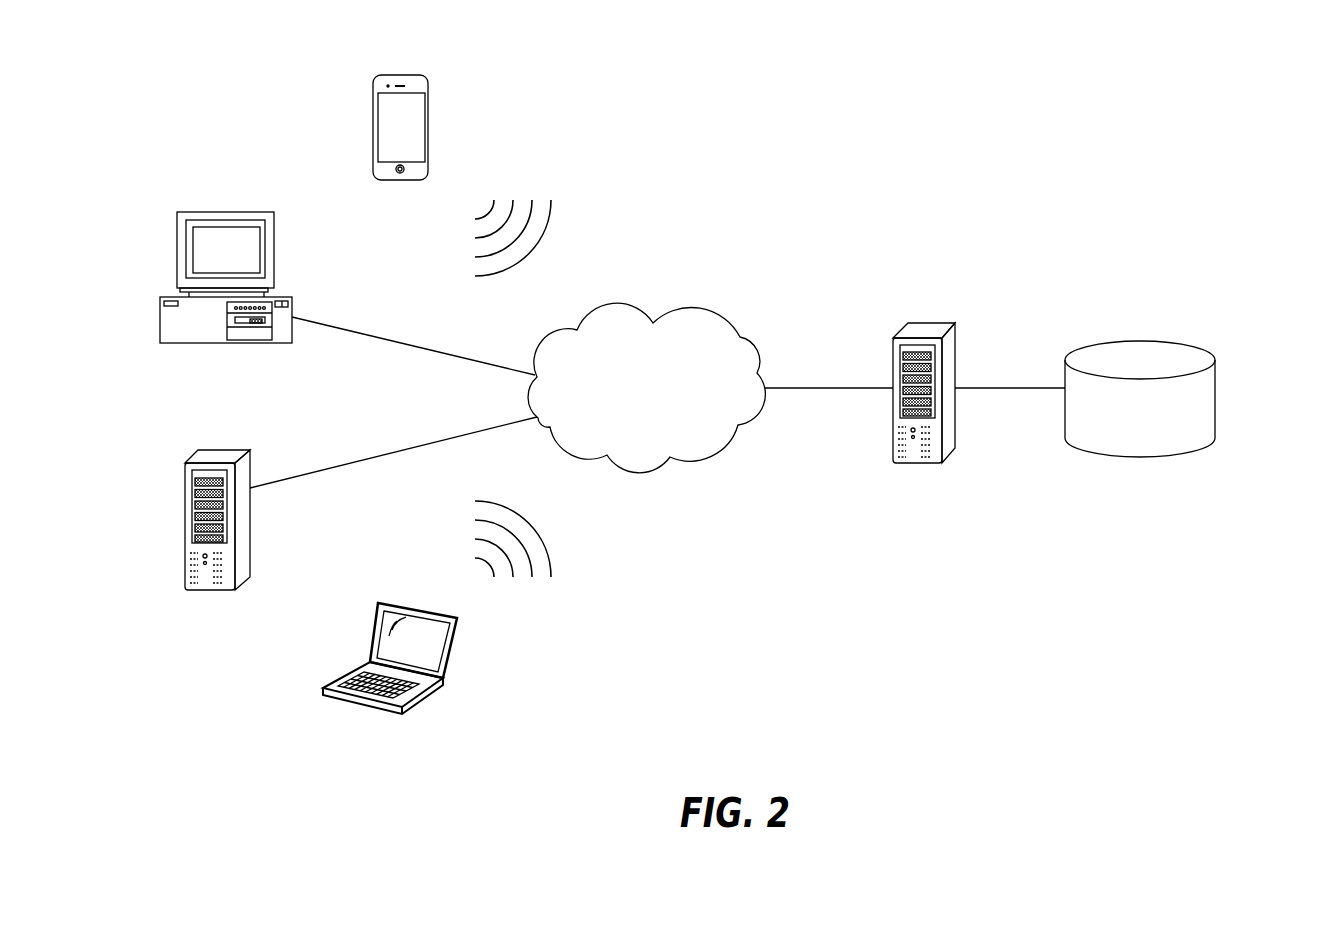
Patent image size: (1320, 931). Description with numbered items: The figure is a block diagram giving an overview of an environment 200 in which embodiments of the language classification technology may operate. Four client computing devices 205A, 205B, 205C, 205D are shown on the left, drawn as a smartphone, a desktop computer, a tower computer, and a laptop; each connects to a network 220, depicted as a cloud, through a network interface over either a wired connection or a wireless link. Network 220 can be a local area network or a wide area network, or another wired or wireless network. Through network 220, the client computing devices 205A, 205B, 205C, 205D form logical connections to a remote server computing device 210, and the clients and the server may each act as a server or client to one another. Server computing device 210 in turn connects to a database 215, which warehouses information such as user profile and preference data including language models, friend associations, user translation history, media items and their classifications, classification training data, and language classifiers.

The environment 200 is at (947, 137).
The client computing device 205A is at (428, 74).
The client computing device 205B is at (267, 210).
The client computing device 205C is at (238, 443).
The client computing device 205D is at (455, 652).
The server computing device 210 is at (955, 315).
The database 215 is at (1190, 343).
The network 220 is at (700, 308).